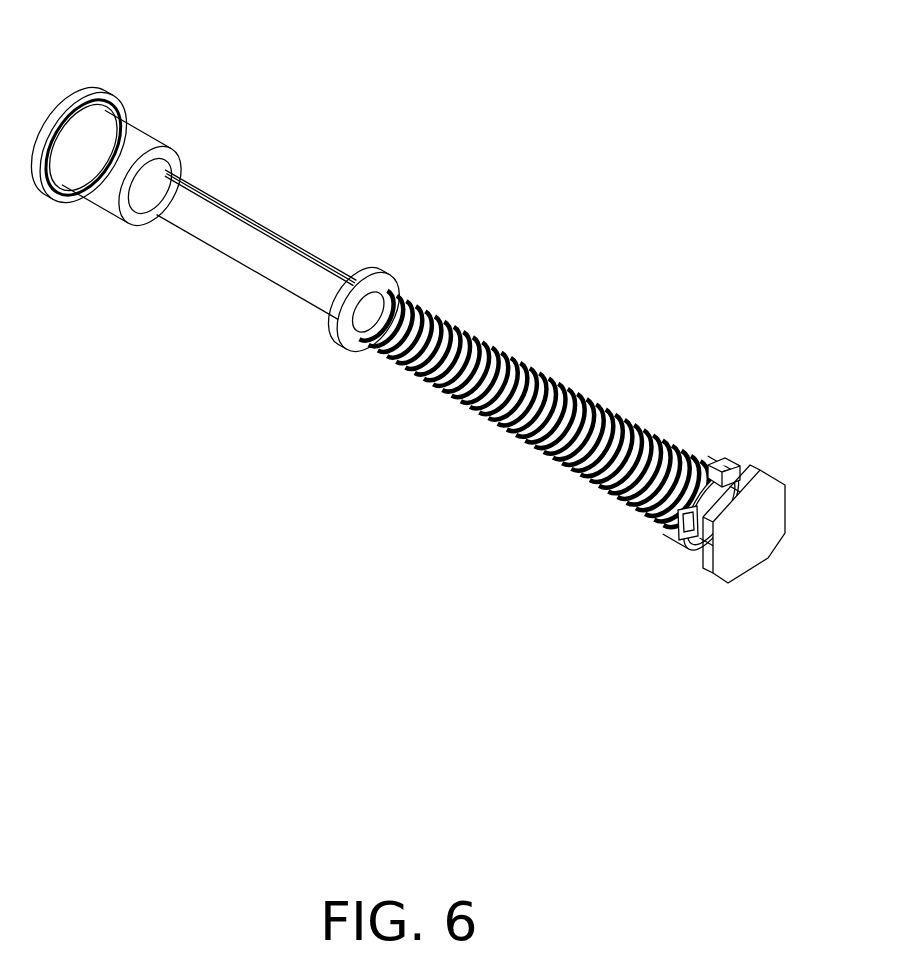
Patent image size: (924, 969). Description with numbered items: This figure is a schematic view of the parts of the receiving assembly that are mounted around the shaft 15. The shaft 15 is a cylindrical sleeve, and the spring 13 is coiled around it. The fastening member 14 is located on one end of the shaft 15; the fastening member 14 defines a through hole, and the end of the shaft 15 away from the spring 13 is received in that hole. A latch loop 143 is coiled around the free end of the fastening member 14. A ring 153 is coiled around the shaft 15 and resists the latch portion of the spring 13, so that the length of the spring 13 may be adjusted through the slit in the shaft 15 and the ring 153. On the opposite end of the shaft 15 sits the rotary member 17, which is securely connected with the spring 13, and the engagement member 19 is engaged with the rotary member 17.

The latch loop 143 is at (65, 100).
The fastening member 14 is at (107, 175).
The shaft 15 is at (212, 232).
The ring 153 is at (345, 315).
The spring 13 is at (513, 357).
The rotary member 17 is at (693, 495).
The engagement member 19 is at (760, 512).